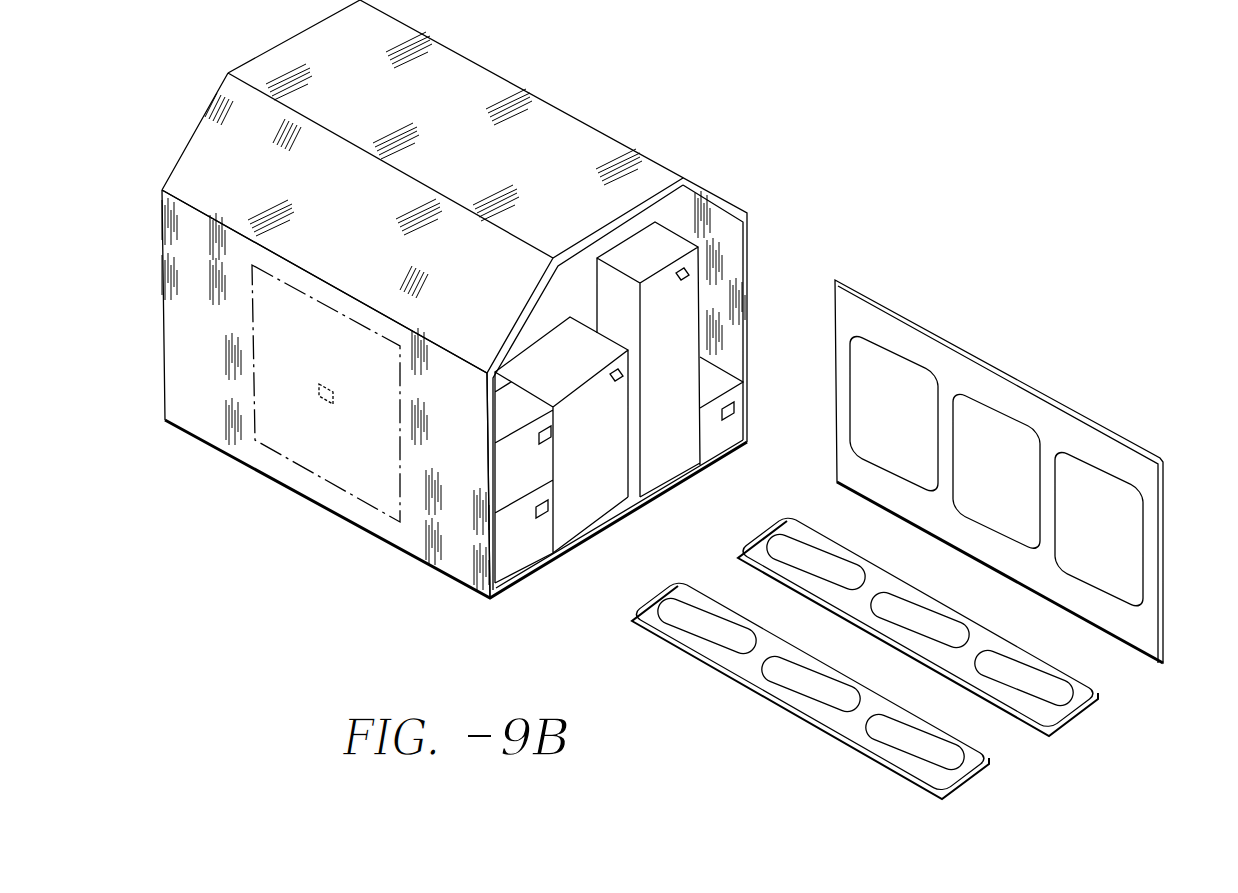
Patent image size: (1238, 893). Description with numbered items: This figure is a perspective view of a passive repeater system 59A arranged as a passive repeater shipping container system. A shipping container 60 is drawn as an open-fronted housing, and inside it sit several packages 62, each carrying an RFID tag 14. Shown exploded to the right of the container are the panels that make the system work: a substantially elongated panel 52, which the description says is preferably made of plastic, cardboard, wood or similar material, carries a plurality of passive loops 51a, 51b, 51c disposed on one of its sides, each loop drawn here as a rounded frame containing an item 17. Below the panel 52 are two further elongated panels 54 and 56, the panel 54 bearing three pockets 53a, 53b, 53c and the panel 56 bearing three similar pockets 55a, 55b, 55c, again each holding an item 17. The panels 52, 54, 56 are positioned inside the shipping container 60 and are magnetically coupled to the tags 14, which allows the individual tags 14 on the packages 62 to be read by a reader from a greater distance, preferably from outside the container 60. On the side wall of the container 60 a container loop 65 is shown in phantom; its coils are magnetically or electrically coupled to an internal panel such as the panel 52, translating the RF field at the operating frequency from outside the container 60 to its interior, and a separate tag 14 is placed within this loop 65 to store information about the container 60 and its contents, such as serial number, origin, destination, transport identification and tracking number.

The passive repeater system 59A is at (456, 331).
The shipping container 60 is at (327, 508).
The container loop 65 is at (318, 302).
The packages 62 is at (665, 463).
The tag 14 is at (318, 391).
The panel 52 is at (1035, 458).
The passive loop 51a is at (996, 471).
The passive loop 51b is at (894, 413).
The passive loop 51c is at (1099, 529).
The medication units 17 is at (909, 421).
The panel 54 is at (939, 635).
The first pocket of first tray 53a is at (816, 561).
The second pocket of first tray 53b is at (920, 619).
The third pocket of first tray 53c is at (1024, 677).
The panel 56 is at (832, 700).
The first pocket of second tray 55a is at (707, 625).
The second pocket of second tray 55b is at (811, 683).
The third pocket of second tray 55c is at (915, 741).